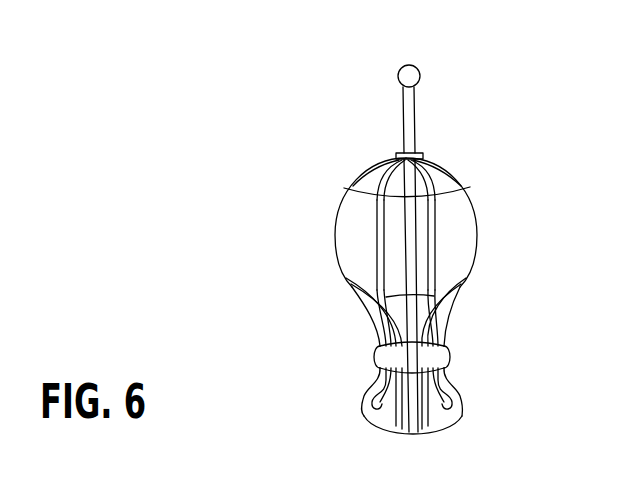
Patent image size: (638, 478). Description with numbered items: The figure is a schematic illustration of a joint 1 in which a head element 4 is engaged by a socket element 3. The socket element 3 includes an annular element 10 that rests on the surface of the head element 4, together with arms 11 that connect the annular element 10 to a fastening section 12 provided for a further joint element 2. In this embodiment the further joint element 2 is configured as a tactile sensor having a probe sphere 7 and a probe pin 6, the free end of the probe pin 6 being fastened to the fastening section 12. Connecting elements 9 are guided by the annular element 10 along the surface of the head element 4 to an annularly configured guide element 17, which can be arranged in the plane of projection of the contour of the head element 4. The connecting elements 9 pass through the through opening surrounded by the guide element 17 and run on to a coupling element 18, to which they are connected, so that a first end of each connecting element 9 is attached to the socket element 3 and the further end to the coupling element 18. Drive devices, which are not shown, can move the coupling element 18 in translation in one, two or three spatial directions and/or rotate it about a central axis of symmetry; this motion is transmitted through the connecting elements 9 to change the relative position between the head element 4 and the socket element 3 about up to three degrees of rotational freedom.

The joint 1 is at (276, 332).
The further joint element 2 is at (433, 245).
The socket element 3 is at (470, 187).
The head element 4 is at (460, 215).
The probe pin 6 is at (416, 97).
The probe sphere 7 is at (419, 68).
The connecting elements 9 is at (376, 251).
The annular element 10 is at (372, 174).
The arm elements 11 is at (386, 156).
The fastening section 12 is at (400, 154).
The guide element 17 is at (452, 355).
The coupling element 18 is at (462, 408).